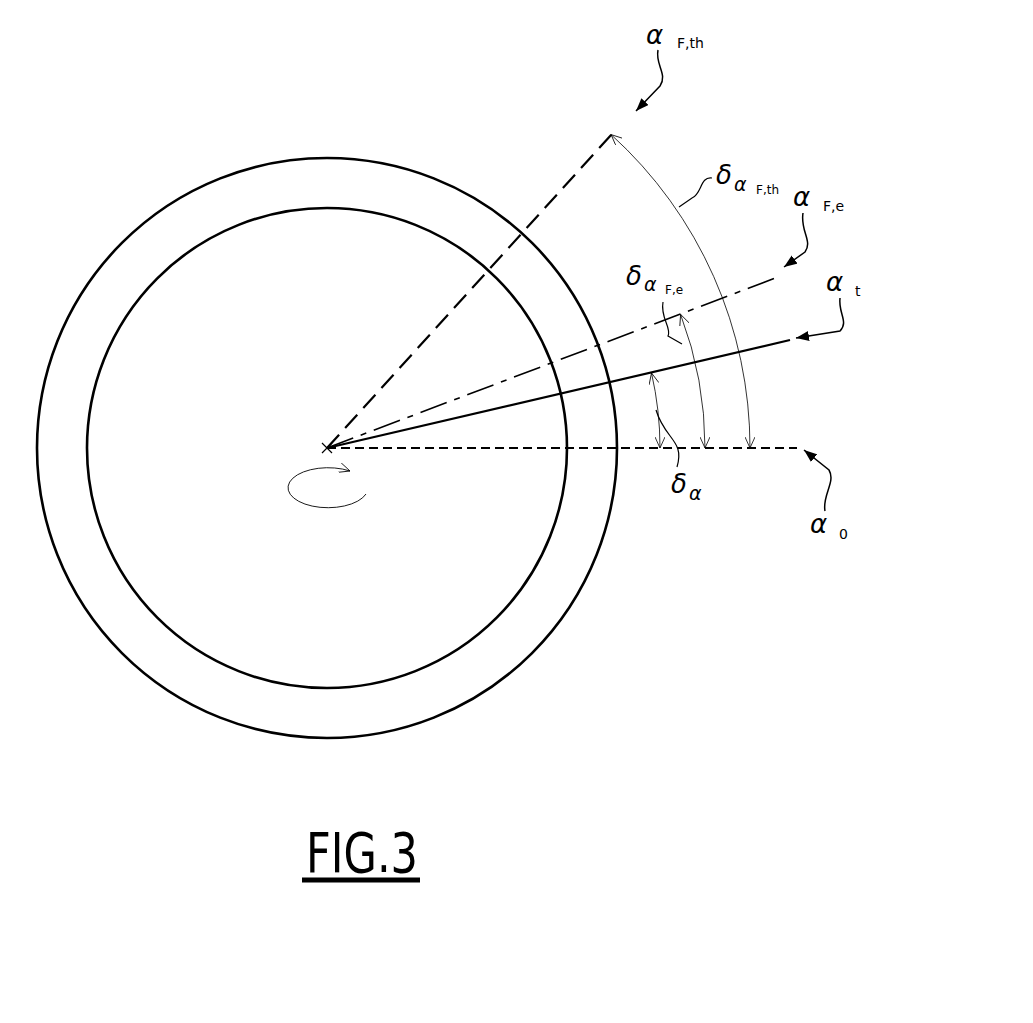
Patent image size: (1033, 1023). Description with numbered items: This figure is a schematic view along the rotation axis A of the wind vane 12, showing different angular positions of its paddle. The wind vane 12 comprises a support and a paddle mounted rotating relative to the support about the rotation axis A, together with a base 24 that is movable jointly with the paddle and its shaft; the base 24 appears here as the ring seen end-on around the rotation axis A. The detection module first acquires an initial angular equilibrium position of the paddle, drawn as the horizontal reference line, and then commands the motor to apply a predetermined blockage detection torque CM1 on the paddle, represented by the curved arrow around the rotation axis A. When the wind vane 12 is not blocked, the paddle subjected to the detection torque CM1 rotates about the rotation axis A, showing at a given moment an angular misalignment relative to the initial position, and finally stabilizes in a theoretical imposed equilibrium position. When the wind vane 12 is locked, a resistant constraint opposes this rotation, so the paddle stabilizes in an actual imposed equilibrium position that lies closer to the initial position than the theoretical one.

The wind vane 12 is at (132, 157).
The base 24 is at (597, 582).
The rotation axis A is at (327, 448).
The predetermined blockage detection torque CM1 is at (327, 511).